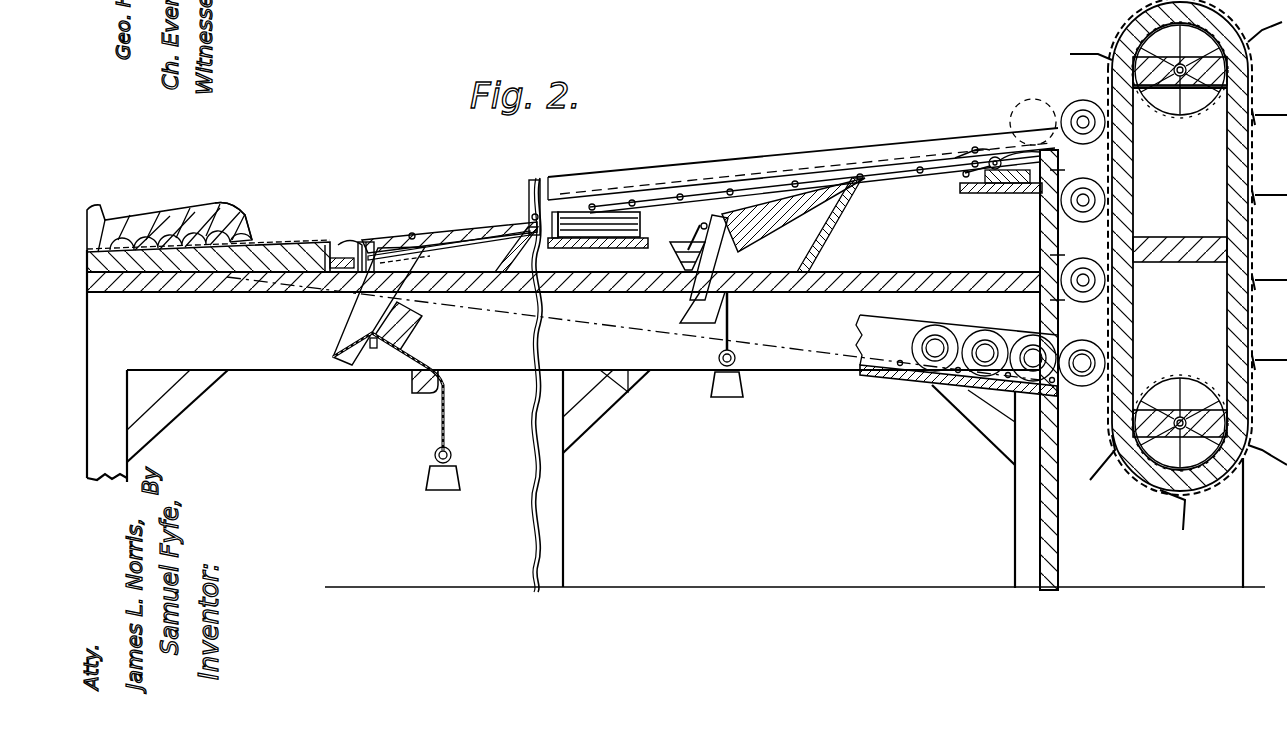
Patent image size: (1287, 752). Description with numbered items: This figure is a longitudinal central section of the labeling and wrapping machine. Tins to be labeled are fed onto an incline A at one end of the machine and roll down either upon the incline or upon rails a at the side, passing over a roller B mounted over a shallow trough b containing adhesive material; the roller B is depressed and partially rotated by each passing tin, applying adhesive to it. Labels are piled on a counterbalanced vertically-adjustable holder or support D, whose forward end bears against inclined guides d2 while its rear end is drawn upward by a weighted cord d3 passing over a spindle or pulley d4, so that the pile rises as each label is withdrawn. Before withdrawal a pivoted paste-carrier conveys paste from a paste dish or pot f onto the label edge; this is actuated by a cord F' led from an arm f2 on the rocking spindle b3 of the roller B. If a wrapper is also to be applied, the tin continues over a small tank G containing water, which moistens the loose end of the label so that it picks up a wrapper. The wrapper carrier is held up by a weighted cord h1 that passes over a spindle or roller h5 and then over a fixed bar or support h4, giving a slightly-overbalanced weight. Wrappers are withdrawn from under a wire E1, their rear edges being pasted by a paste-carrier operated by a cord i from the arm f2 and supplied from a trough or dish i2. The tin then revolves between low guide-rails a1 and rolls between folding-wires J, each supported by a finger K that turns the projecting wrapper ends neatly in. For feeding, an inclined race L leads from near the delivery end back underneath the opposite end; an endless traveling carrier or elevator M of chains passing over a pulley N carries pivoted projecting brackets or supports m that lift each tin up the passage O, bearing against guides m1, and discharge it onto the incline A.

The finger K is at (169, 228).
The folding-wires J is at (233, 223).
The low guide-rails a1 is at (208, 242).
The wire E1 is at (366, 245).
The trough or dish i2 is at (343, 257).
The cord i is at (431, 298).
The spindle or roller h5 is at (372, 348).
The fixed bar or support h4 is at (412, 390).
The weighted cord h1 is at (447, 440).
The tank G is at (598, 230).
The cord F' is at (682, 242).
The paste dish or pot f is at (688, 256).
The incline A is at (803, 149).
The rails a is at (742, 202).
The holder or support D is at (793, 215).
The inclined guides d2 is at (833, 225).
The spindle or pulley d4 is at (714, 312).
The weighted cord d3 is at (732, 344).
The shallow trough b is at (1003, 193).
The rocking spindle b3 is at (960, 176).
The roller B is at (993, 156).
The arm f2 is at (965, 152).
The passage O is at (1083, 259).
The inclined race L is at (980, 355).
The endless traveling carrier or elevator M is at (1240, 270).
The pulley N is at (1186, 138).
The guides m1 is at (1133, 176).
The pivoted projecting brackets or supports m is at (1168, 277).